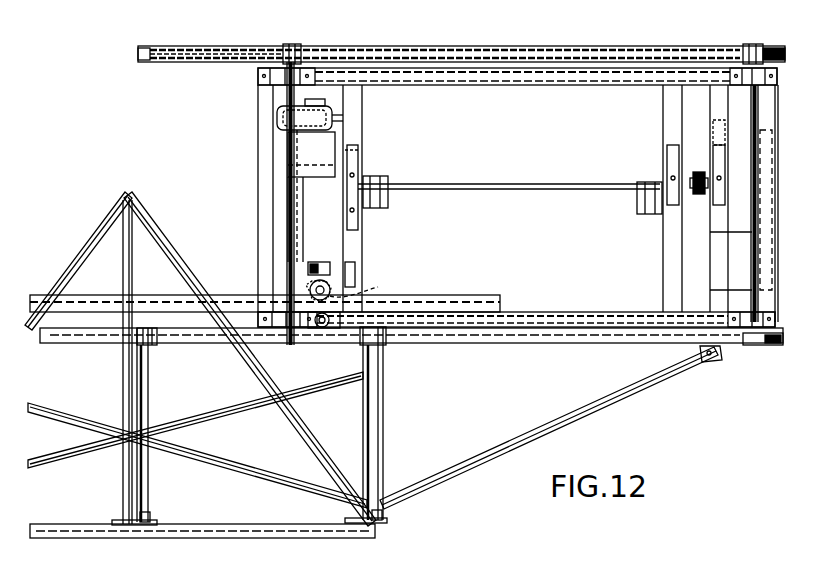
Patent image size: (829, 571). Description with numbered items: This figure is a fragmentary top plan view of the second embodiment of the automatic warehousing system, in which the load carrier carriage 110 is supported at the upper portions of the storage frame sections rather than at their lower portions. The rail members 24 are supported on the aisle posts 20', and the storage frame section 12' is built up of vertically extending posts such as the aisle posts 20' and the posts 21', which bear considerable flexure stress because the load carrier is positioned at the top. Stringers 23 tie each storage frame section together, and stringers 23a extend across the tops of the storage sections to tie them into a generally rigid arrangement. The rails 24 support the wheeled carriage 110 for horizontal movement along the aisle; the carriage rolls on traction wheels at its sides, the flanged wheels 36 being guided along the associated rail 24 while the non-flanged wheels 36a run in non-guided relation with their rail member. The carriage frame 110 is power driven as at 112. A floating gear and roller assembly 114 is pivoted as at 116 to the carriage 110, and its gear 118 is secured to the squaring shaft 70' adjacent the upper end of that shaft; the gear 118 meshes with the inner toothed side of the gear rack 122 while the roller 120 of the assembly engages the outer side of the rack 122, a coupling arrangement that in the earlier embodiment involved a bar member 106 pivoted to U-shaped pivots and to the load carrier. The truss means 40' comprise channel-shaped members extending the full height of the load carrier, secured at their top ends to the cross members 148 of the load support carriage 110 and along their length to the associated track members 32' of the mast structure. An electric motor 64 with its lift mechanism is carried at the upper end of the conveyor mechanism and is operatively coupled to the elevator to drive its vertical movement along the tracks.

The load carrier carriage 110 is at (490, 76).
The rail member 24 is at (222, 46).
The wheel 36a is at (753, 38).
The aisle post 20' is at (457, 268).
The wheel 36 is at (266, 318).
The storage frame section 12' is at (411, 448).
The gear rack 122 is at (172, 296).
The stringer 23a is at (143, 218).
The stringer 23 is at (290, 540).
The post 21' is at (277, 506).
The cross member 148 is at (366, 105).
The truss means 40' is at (535, 175).
The power drive 112 is at (290, 143).
The floating gear and roller assembly 114 is at (312, 260).
The electric motor 64 is at (740, 245).
The track member 32' is at (533, 204).
The gear 118 is at (306, 268).
The bar member 106 is at (322, 262).
The pivot 116 is at (332, 288).
The squaring shaft 70' is at (381, 266).
The roller 120 is at (340, 340).